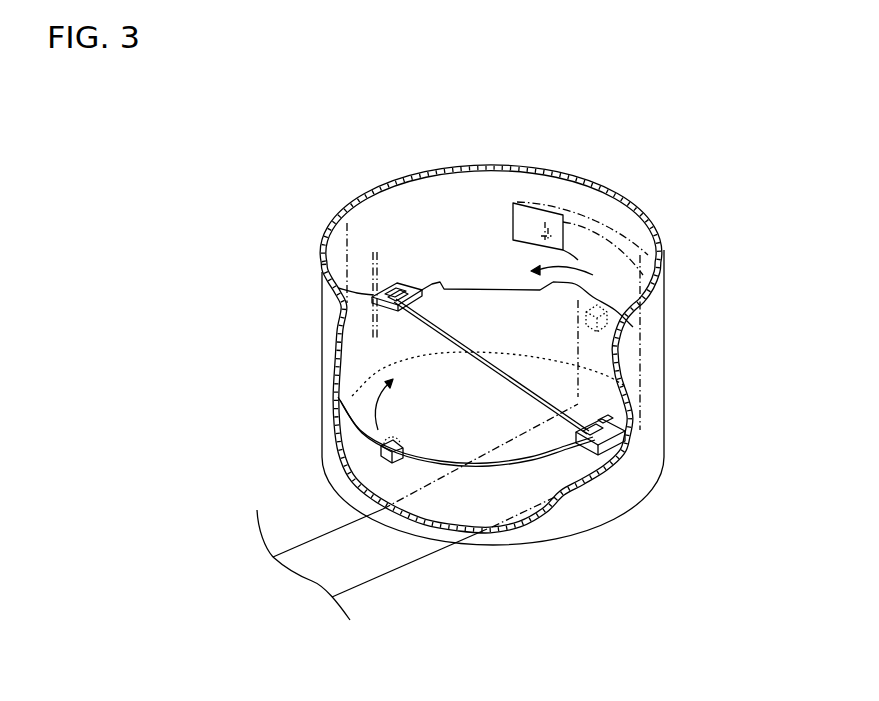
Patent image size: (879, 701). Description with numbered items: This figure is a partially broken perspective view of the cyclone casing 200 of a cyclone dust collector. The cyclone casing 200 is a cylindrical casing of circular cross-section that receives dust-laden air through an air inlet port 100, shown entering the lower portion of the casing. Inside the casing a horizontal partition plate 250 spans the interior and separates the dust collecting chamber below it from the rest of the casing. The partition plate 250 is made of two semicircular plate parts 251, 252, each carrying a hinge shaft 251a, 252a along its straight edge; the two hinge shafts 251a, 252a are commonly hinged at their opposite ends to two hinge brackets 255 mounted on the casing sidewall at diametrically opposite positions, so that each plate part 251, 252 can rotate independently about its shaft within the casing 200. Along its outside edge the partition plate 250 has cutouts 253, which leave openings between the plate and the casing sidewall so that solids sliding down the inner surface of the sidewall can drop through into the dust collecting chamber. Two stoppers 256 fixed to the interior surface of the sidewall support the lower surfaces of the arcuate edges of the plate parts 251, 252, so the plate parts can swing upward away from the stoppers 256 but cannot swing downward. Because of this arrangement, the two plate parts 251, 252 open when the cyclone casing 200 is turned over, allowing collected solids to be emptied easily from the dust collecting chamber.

The air inlet port 100 is at (398, 555).
The cyclone casing 200 is at (661, 226).
The horizontal partition plate 250 is at (366, 354).
The semicircular plate part 251 is at (367, 410).
The hinge shaft 251a is at (333, 287).
The semicircular plate part 252 is at (455, 300).
The hinge shaft 252a is at (403, 292).
The cutout 253 is at (492, 284).
The hinge bracket 255 is at (603, 443).
The stopper 256 is at (608, 328).